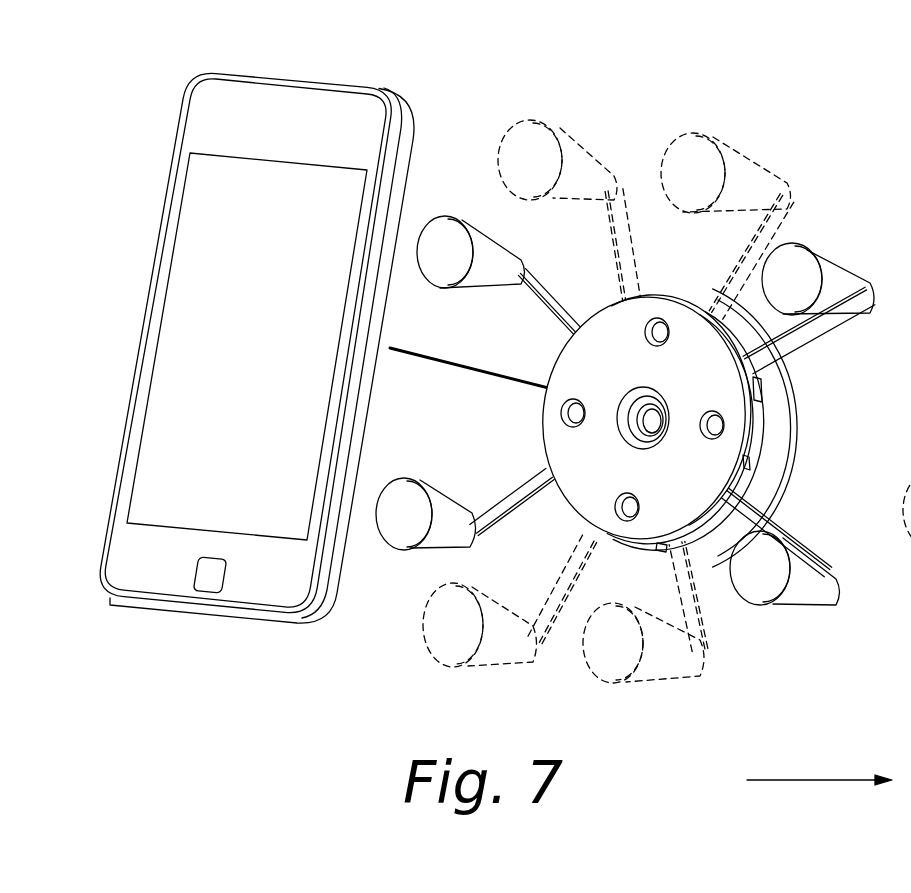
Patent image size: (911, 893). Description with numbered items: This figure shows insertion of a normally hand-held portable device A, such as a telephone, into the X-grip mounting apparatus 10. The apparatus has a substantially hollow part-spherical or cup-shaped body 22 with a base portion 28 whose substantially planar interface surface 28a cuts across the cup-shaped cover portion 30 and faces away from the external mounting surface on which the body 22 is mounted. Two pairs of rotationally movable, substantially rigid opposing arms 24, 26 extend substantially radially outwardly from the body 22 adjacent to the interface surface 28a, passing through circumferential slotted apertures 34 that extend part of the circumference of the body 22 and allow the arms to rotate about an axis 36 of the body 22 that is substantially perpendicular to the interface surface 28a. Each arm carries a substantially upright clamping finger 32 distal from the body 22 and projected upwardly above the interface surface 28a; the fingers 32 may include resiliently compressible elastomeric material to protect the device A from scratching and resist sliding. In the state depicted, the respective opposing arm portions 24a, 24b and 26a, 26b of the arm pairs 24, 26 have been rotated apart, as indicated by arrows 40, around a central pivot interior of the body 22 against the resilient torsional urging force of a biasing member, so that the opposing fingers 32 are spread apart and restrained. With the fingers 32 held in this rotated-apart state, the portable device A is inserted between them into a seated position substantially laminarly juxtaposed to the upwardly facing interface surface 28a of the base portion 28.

The hand-held device A is at (312, 82).
The mounting apparatus 10 is at (852, 170).
The body 22 is at (800, 433).
The arm 24 is at (837, 327).
The arm portion 24a is at (793, 335).
The arm portion 24b is at (495, 502).
The arm 26 is at (788, 533).
The arm portion 26a is at (767, 523).
The arm portion 26b is at (525, 300).
The base portion 28 is at (568, 366).
The interface surface 28a is at (637, 372).
The cover portion 30 is at (790, 457).
The clamping finger 32 is at (543, 172).
The slotted aperture 34 is at (765, 392).
The axis 36 is at (640, 422).
The arrows 40 is at (590, 208).